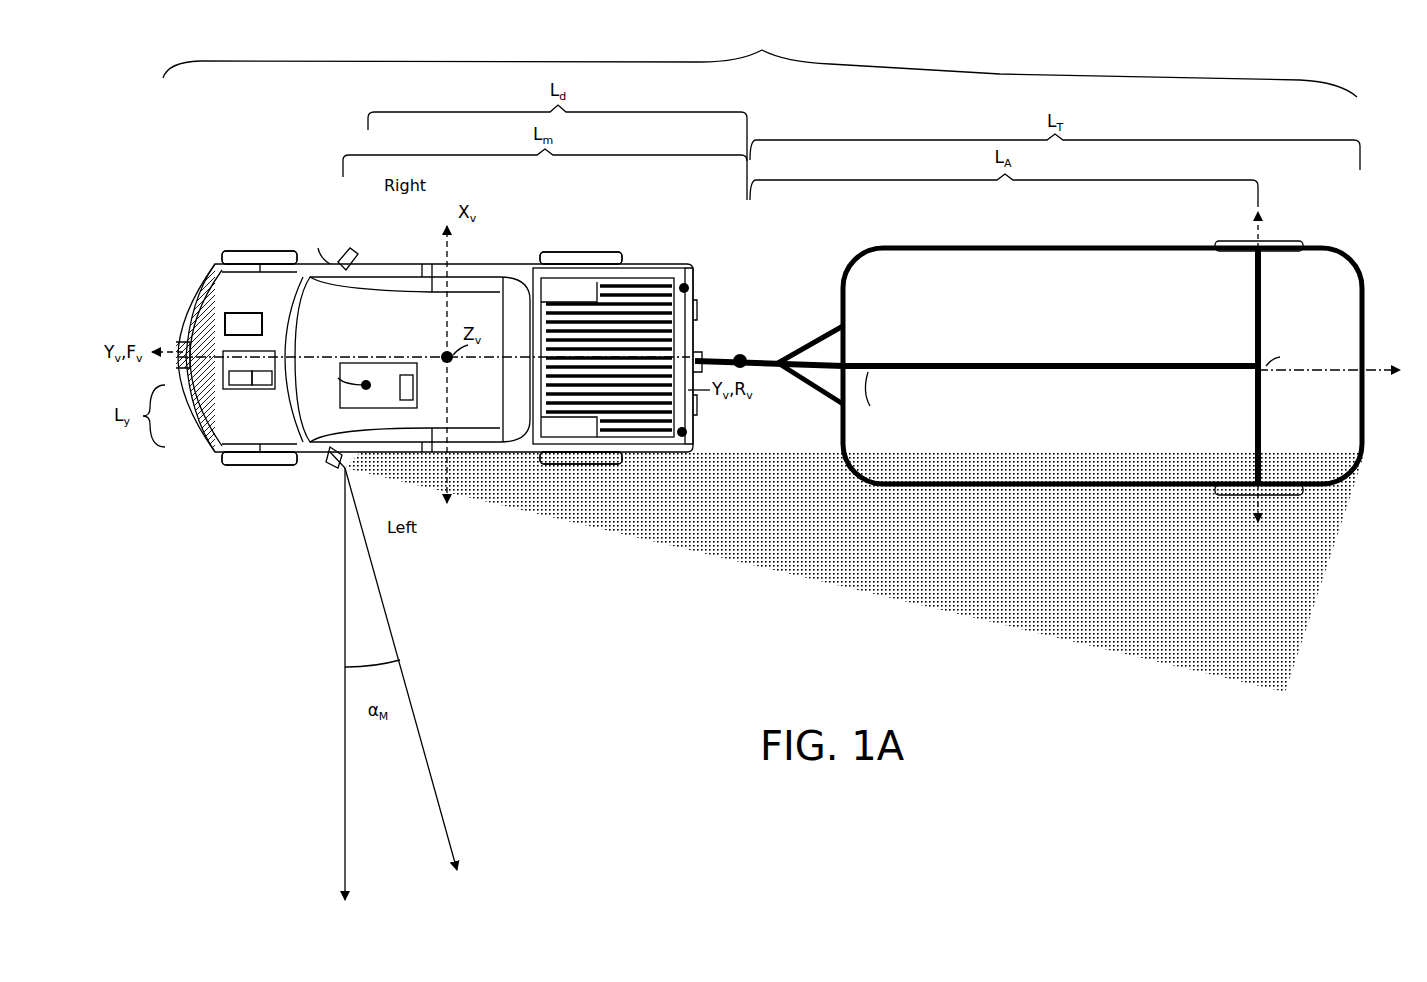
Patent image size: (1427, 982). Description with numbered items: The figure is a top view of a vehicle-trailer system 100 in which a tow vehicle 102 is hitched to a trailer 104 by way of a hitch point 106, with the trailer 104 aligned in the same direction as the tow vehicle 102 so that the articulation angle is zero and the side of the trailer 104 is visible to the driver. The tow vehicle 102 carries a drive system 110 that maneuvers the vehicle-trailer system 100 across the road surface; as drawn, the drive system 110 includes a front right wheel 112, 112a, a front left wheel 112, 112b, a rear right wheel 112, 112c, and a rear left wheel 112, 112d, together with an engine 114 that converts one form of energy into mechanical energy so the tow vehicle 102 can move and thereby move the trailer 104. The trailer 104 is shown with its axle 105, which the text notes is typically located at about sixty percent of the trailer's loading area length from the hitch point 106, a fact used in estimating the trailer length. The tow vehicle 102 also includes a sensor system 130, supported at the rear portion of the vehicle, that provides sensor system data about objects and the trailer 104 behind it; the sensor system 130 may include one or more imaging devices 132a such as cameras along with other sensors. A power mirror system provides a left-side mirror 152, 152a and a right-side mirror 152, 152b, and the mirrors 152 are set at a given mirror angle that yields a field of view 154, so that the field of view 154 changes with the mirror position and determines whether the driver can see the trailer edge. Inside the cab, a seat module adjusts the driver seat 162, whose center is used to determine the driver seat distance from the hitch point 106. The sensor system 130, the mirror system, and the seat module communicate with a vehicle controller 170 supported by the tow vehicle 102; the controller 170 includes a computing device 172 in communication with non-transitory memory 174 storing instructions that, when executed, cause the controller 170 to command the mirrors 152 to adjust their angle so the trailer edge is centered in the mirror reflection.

The vehicle-trailer system 100 is at (760, 56).
The tow vehicle 102 is at (205, 268).
The trailer 104 is at (1058, 365).
The axle 105 is at (1254, 296).
The hitch point 106 is at (745, 352).
The drive system 110 is at (751, 364).
The wheel 112 is at (751, 364).
The front right wheel 112a is at (280, 252).
The front left wheel 112b is at (242, 466).
The rear right wheel 112c is at (598, 253).
The rear left wheel 112d is at (588, 465).
The engine 114 is at (240, 310).
The sensor system 130 is at (182, 348).
The imaging device 132a is at (697, 352).
The mirror 152 is at (366, 354).
The left-side mirror 152a is at (357, 462).
The right-side mirror 152b is at (338, 259).
The field of view 154 is at (855, 676).
The driver seat 162 is at (368, 362).
The vehicle controller 170 is at (248, 388).
The computing device 172 is at (240, 386).
The non-transitory memory 174 is at (262, 386).